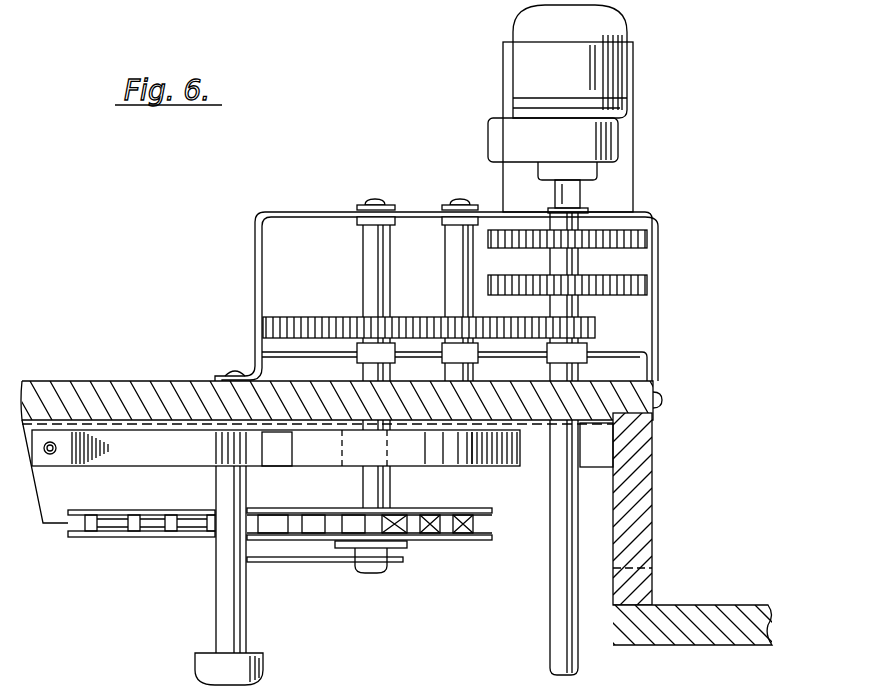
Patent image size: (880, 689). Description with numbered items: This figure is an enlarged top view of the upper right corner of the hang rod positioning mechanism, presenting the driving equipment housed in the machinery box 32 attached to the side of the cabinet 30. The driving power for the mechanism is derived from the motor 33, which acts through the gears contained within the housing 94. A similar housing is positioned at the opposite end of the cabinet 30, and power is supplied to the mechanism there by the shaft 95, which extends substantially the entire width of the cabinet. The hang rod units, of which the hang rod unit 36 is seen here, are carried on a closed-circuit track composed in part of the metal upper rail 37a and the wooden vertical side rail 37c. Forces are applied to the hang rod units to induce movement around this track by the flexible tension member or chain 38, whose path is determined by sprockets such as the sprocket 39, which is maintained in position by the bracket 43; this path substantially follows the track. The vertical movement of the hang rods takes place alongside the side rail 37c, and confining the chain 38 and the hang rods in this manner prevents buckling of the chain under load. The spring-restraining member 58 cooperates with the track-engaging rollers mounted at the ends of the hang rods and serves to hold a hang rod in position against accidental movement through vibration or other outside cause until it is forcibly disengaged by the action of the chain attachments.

The cabinet 30 is at (678, 607).
The machinery box 32 is at (153, 380).
The motor 33 is at (618, 88).
The hang rod unit 36 is at (218, 590).
The upper rail 37a is at (513, 504).
The vertical side rail 37c is at (603, 450).
The chain 38 is at (130, 531).
The sprocket 39 is at (300, 508).
The bracket 43 is at (285, 562).
The spring-restraining member 58 is at (123, 458).
The housing 94 is at (657, 290).
The shaft 95 is at (551, 636).